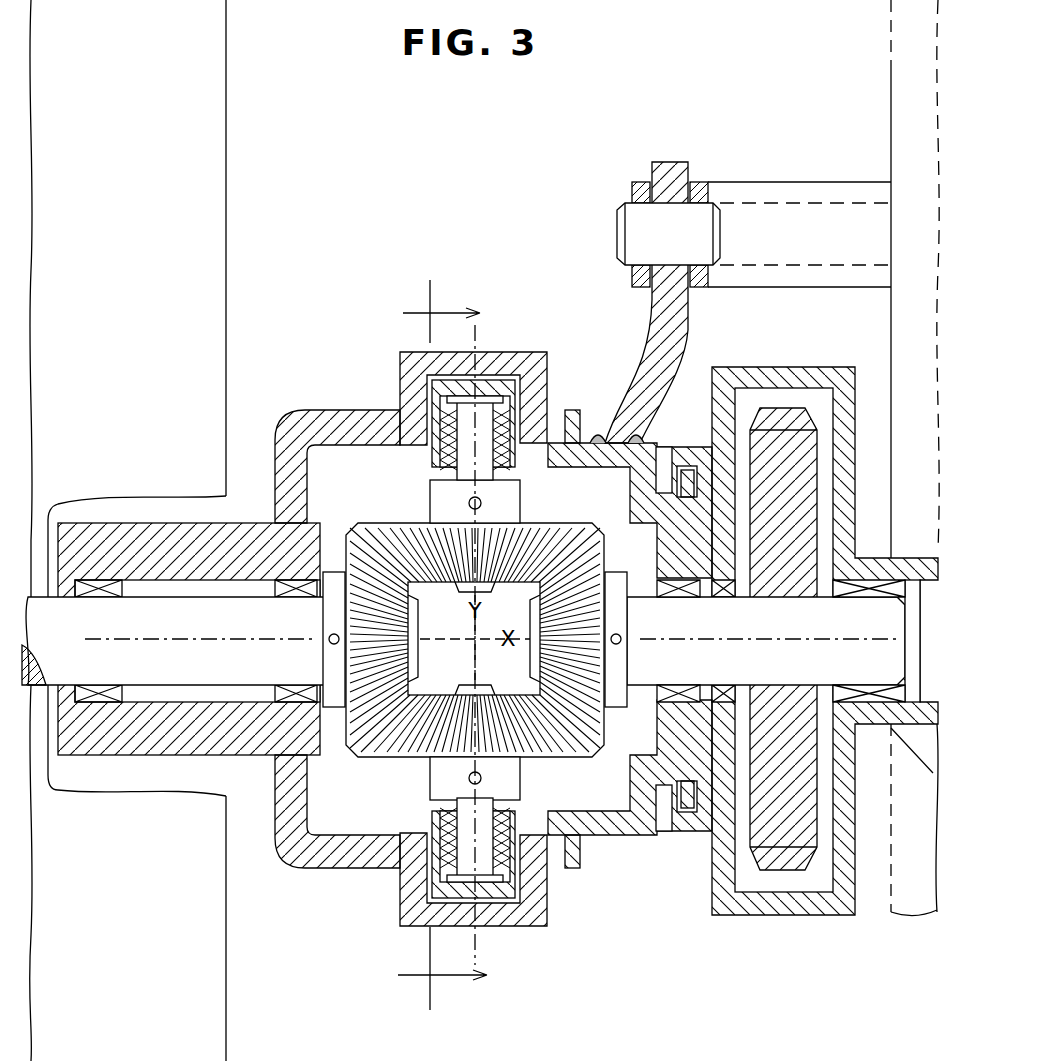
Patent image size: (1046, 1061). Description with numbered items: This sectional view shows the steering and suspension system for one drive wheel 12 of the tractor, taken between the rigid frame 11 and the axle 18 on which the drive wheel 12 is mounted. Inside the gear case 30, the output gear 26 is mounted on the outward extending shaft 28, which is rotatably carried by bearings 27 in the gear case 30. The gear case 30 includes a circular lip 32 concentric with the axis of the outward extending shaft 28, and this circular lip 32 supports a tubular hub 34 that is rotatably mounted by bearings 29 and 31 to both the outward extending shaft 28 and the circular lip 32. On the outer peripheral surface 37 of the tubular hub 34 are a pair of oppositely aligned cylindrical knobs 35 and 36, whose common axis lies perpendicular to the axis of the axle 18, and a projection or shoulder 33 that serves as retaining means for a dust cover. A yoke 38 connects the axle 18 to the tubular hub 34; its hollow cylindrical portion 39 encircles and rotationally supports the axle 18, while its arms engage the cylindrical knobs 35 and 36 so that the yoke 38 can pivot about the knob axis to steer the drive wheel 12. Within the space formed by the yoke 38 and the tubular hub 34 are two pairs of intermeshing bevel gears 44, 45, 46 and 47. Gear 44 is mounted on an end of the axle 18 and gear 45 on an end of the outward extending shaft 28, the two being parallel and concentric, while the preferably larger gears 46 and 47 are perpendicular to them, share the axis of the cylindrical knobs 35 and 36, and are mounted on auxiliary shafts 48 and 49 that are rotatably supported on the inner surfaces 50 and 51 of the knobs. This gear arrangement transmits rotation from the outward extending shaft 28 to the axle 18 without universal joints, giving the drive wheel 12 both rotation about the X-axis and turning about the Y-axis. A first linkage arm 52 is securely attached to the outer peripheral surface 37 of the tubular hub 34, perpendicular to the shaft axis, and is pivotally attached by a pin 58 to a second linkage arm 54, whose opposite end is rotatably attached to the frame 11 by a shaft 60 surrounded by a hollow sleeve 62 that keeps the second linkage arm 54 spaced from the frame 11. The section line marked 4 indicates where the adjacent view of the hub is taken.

The rigid frame 11 is at (900, 74).
The drive wheel 12 is at (212, 95).
The axle 18 is at (91, 632).
The output gear 26 is at (773, 408).
The bearings 27 is at (862, 587).
The outward extending shaft 28 is at (761, 672).
The bearing 29 is at (670, 588).
The gear case 30 is at (822, 372).
The bearing 31 is at (690, 466).
The circular lip 32 is at (670, 490).
The projection or shoulder 33 is at (573, 410).
The tubular hub 34 is at (598, 845).
The cylindrical knob 35 is at (490, 392).
The cylindrical knob 36 is at (490, 890).
The outer peripheral surface 37 is at (592, 445).
The yoke 38 is at (291, 400).
The hollow cylindrical portion 39 is at (110, 528).
The bevel gear 44 is at (347, 553).
The bevel gear 45 is at (604, 550).
The bevel gear 46 is at (544, 545).
The bevel gear 47 is at (390, 745).
The auxiliary shaft 48 is at (456, 476).
The auxiliary shaft 49 is at (458, 818).
The inner surface 50 is at (450, 432).
The inner surface 51 is at (452, 858).
The first linkage arm 52 is at (667, 304).
The second linkage arm 54 is at (697, 185).
The pin 58 is at (633, 239).
The shaft 60 is at (810, 203).
The hollow sleeve 62 is at (765, 182).
The section line 4 is at (442, 645).